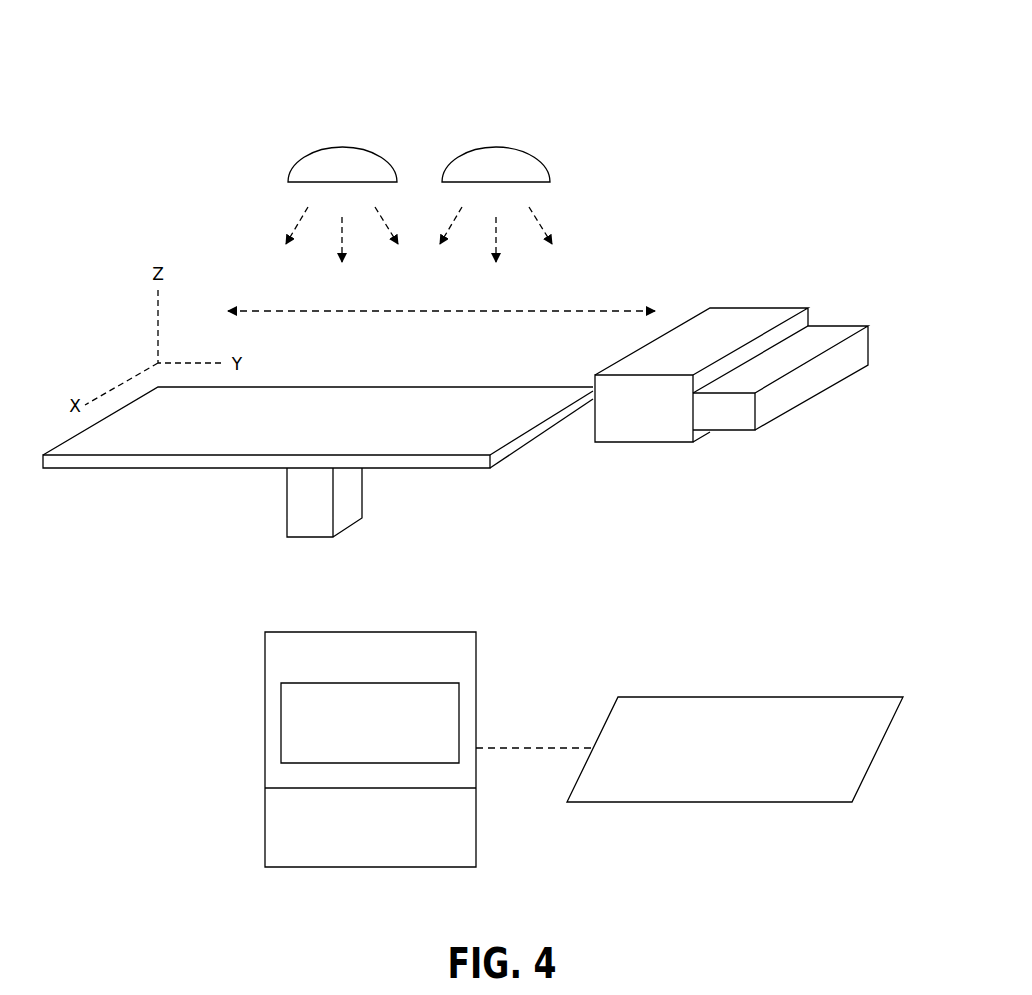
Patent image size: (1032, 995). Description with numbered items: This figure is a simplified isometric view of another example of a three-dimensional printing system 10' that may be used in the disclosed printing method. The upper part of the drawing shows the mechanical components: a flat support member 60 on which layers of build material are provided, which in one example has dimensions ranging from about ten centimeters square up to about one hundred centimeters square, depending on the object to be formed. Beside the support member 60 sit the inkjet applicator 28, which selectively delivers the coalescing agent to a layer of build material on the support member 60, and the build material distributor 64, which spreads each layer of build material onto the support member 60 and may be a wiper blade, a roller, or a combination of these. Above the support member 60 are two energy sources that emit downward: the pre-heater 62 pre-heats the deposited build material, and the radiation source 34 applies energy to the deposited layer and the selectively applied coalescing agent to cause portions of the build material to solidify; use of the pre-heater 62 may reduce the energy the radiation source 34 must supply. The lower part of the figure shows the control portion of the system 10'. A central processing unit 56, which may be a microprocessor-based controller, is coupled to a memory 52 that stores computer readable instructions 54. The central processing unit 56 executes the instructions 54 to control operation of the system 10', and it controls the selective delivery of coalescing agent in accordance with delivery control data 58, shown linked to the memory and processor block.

The printing system 10' is at (702, 59).
The pre-heater 62 is at (341, 182).
The radiation source 34 is at (496, 182).
The support member 60 is at (376, 387).
The inkjet applicator 28 is at (756, 308).
The build material distributor 64 is at (836, 326).
The memory 52 is at (282, 657).
The computer readable instructions 54 is at (281, 720).
The central processing unit 56 is at (265, 823).
The delivery control data 58 is at (760, 697).